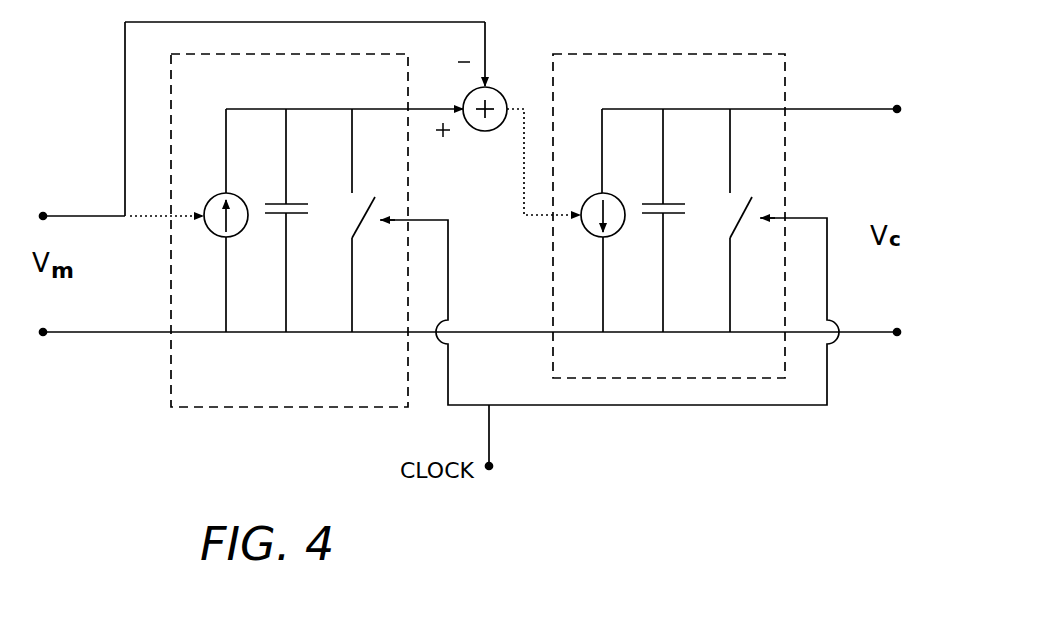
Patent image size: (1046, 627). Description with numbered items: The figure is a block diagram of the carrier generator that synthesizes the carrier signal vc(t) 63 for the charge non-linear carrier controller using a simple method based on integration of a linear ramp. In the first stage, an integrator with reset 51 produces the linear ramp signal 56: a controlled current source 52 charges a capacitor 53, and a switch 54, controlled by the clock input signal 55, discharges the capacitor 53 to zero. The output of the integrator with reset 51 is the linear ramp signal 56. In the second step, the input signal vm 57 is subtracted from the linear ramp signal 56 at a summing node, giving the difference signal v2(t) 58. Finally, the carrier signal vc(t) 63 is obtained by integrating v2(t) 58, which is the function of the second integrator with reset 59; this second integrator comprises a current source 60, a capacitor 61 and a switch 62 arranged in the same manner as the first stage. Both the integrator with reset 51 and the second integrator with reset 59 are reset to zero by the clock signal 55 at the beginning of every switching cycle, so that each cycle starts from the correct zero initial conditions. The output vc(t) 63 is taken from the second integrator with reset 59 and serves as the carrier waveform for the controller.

The integrator with reset 51 is at (268, 412).
The controlled current source 52 is at (208, 232).
The capacitor 53 is at (272, 203).
The switch 54 is at (362, 214).
The clock input signal 55 is at (491, 466).
The linear ramp signal 56 is at (380, 109).
The vm 57 is at (43, 215).
The v2(t) 58 is at (524, 107).
The second integrator with reset 59 is at (665, 383).
The current source 60 is at (588, 231).
The capacitor 61 is at (652, 203).
The switch 62 is at (740, 214).
The vc(t) 63 is at (897, 108).